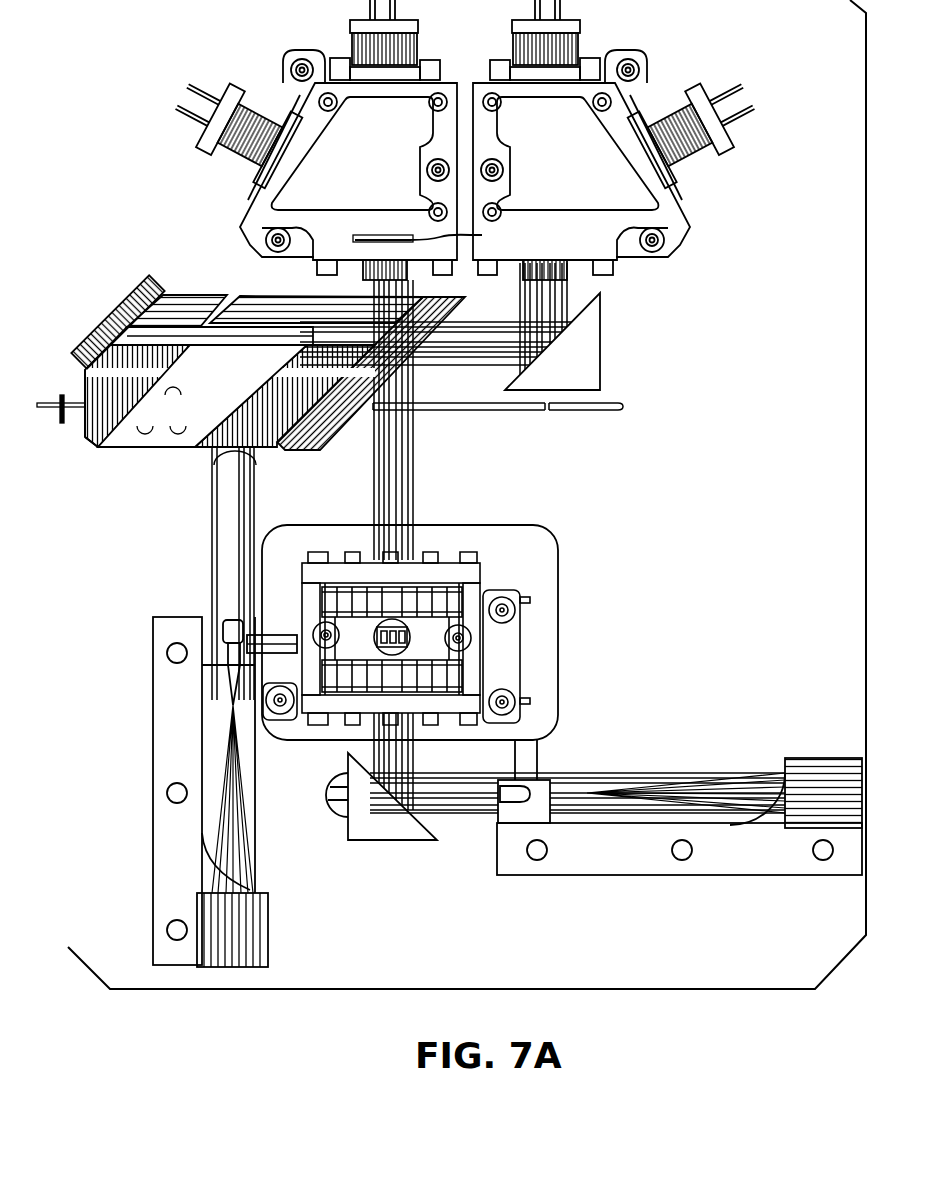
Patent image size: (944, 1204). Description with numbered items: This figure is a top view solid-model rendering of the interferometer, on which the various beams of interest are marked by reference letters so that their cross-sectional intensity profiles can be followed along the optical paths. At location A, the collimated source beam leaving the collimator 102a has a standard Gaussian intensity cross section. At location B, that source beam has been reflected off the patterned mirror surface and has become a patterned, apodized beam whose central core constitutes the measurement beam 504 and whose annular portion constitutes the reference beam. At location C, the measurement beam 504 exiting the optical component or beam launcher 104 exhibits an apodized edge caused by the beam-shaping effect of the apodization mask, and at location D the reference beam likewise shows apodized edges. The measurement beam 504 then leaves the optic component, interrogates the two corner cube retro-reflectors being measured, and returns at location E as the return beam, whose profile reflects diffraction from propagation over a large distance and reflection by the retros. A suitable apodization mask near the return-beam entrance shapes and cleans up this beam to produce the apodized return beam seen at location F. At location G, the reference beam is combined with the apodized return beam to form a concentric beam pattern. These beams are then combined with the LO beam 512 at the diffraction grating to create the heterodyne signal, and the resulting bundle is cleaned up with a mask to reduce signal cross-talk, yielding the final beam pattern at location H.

The optical component (beam launcher) 104 is at (230, 386).
The measurement beam 504 is at (603, 411).
The LO beam 512 is at (412, 500).
The collimator 102a is at (233, 945).
The location A is at (212, 508).
The location B is at (275, 448).
The location C is at (547, 410).
The location D is at (280, 367).
The location E is at (62, 430).
The location F is at (113, 325).
The location G is at (335, 311).
The location H is at (435, 236).